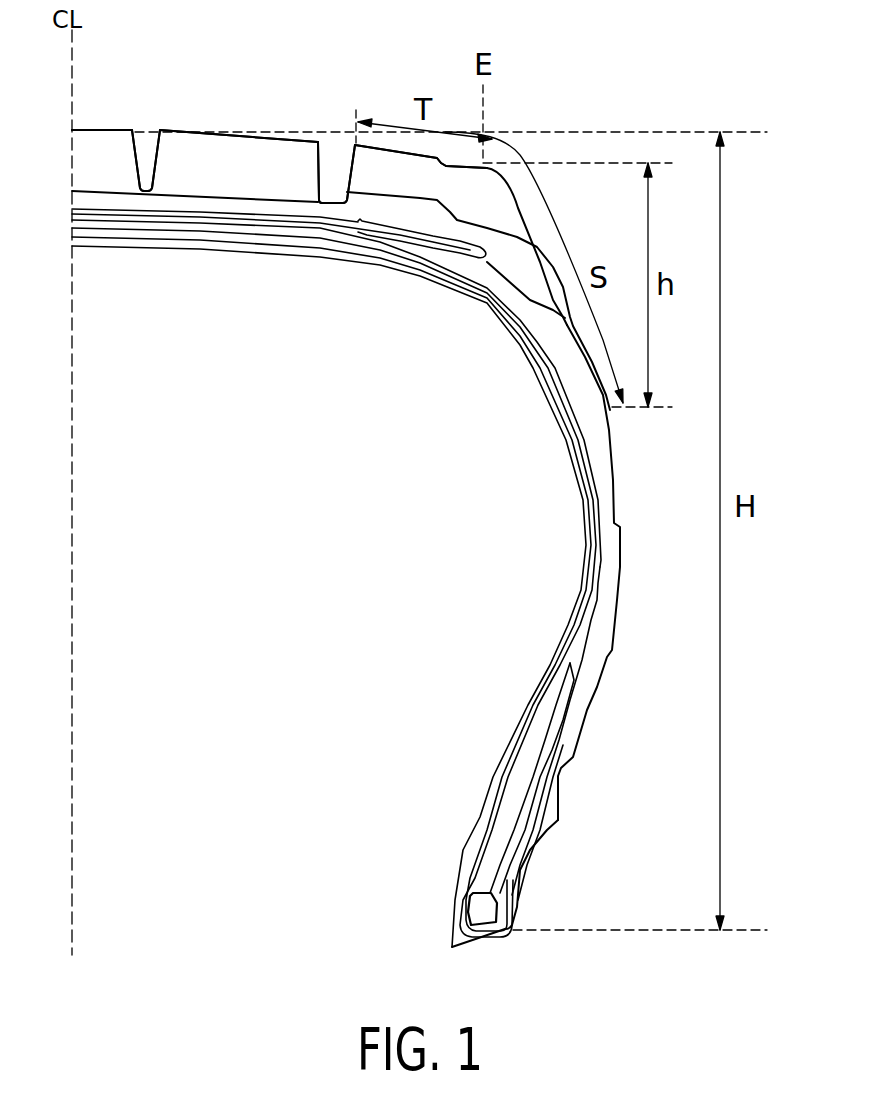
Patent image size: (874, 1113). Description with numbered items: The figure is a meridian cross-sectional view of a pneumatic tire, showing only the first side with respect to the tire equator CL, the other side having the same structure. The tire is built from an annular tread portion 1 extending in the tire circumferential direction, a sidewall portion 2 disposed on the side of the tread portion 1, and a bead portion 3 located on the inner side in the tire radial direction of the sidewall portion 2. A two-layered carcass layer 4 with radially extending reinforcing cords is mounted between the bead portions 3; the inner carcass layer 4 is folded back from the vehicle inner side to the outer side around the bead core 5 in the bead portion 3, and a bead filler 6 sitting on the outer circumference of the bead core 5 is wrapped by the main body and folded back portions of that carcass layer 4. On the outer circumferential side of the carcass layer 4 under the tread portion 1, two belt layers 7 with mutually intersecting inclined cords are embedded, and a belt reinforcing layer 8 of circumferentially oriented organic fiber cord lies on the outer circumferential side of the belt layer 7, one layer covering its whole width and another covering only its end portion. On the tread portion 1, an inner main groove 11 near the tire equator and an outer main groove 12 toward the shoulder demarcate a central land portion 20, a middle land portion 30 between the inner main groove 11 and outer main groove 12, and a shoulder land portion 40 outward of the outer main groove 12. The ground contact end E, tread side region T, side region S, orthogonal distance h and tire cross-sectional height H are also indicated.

The tread portion 1 is at (193, 110).
The sidewall portion 2 is at (632, 556).
The bead portion 3 is at (523, 912).
The carcass layer 4 is at (482, 300).
The bead core 5 is at (480, 908).
The bead filler 6 is at (507, 810).
The belt layer 7 is at (193, 218).
The belt reinforcing layer 8 is at (367, 226).
The inner main groove 11 is at (145, 140).
The outer main groove 12 is at (338, 157).
The central land portion 20 is at (92, 130).
The middle land portion 30 is at (237, 133).
The shoulder land portion 40 is at (390, 147).